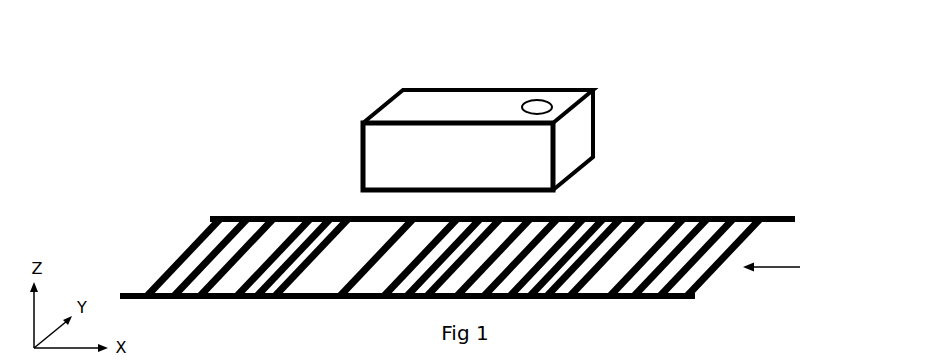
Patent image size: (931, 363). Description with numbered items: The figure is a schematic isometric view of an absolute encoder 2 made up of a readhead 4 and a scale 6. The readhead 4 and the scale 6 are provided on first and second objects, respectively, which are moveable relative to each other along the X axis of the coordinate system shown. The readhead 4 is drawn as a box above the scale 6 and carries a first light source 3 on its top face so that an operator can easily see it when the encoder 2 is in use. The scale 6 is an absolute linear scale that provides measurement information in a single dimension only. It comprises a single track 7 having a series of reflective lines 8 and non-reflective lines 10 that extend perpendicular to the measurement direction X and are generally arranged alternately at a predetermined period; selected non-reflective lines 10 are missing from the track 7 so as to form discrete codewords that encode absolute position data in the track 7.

The absolute encoder 2 is at (666, 47).
The first light source 3 is at (522, 108).
The readhead 4 is at (378, 108).
The scale 6 is at (681, 206).
The track 7 is at (786, 268).
The reflective lines 8 is at (233, 222).
The non-reflective lines 10 is at (200, 292).